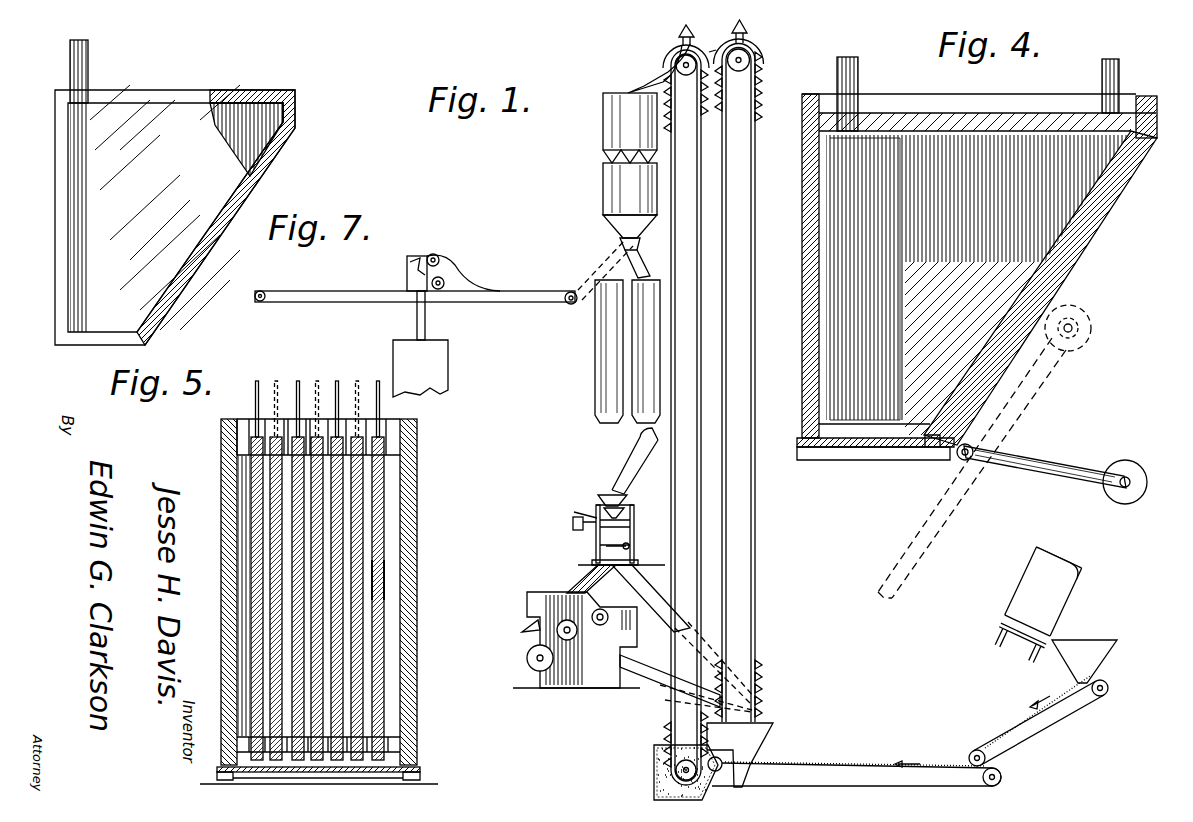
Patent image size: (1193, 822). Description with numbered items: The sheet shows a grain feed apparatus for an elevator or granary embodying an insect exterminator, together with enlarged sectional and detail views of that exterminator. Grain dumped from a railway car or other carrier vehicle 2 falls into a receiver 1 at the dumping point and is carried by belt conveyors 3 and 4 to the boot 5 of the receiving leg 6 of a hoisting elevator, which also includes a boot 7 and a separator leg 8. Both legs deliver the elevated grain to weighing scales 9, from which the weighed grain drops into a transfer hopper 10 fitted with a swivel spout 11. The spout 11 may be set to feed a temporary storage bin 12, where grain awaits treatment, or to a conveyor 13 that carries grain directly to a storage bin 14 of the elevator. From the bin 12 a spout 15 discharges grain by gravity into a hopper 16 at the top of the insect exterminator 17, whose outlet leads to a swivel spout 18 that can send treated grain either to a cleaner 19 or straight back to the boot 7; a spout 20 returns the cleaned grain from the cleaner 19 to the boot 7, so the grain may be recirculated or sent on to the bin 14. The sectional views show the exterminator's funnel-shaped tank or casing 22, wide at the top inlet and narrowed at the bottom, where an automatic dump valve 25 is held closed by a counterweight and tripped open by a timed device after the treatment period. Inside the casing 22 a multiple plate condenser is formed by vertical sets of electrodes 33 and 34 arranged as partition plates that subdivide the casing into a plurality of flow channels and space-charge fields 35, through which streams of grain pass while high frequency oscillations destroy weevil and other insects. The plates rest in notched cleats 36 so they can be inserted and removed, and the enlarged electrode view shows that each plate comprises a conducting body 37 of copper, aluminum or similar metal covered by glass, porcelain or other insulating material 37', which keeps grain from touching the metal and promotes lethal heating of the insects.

In FIG. 4, the receiver 1 is at (1080, 650).
In FIG. 4, the carrier vehicle 2 is at (1025, 580).
In FIG. 4, the conveyor 3 is at (1010, 735).
In FIG. 4, the conveyor 4 is at (872, 775).
In FIG. 1, the boot 5 is at (652, 757).
In FIG. 1, the receiving leg 6 is at (670, 722).
In FIG. 1, the boot 7 is at (750, 743).
In FIG. 1, the separator leg 8 is at (760, 690).
In FIG. 1, the weighing scales 9 is at (620, 127).
In FIG. 1, the transfer hopper 10 is at (615, 190).
In FIG. 1, the swivel spout 11 is at (620, 244).
In FIG. 1, the temporary storage bin 12 is at (603, 345).
In FIG. 1, the conveyor 13 is at (475, 293).
In FIG. 1, the storage bin 14 is at (440, 355).
In FIG. 1, the spout 15 is at (618, 472).
In FIG. 1, the hopper 16 is at (598, 499).
In FIG. 1, the insect exterminator 17 is at (573, 523).
In FIG. 1, the swivel spout 18 is at (640, 590).
In FIG. 1, the cleaner 19 is at (567, 683).
In FIG. 1, the spout 20 is at (652, 680).
In FIG. 4, the casing 22 is at (977, 327).
In FIG. 5, the casing 22 is at (417, 636).
In FIG. 5, the automatic dump valve 25 is at (337, 775).
In FIG. 7, the electrode 33 is at (58, 192).
In FIG. 5, the electrode 33 is at (255, 478).
In FIG. 5, the electrode 34 is at (273, 497).
In FIG. 5, the flow channel 35 is at (285, 535).
In FIG. 5, the notched cleat 36 is at (412, 440).
In FIG. 7, the conducting body 37 is at (271, 139).
In FIG. 5, the conducting body 37 is at (420, 580).
In FIG. 7, the insulating material 37' is at (216, 201).
In FIG. 5, the insulating material 37' is at (418, 587).